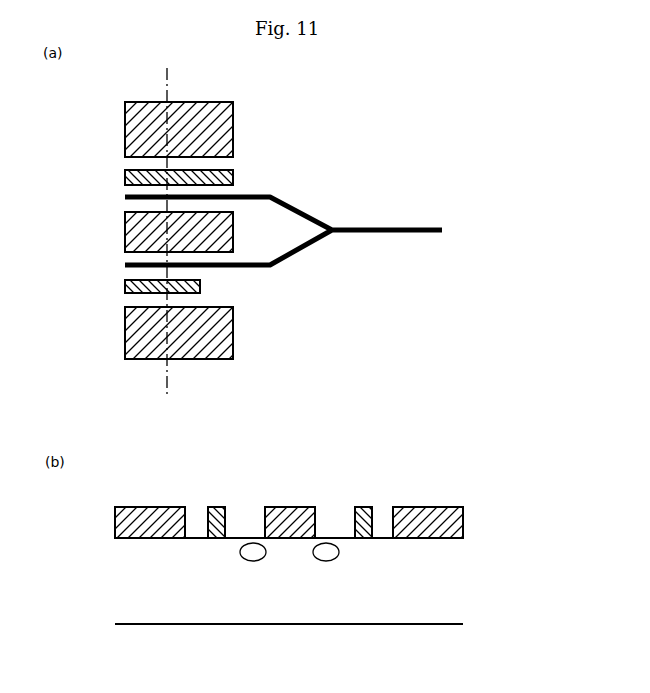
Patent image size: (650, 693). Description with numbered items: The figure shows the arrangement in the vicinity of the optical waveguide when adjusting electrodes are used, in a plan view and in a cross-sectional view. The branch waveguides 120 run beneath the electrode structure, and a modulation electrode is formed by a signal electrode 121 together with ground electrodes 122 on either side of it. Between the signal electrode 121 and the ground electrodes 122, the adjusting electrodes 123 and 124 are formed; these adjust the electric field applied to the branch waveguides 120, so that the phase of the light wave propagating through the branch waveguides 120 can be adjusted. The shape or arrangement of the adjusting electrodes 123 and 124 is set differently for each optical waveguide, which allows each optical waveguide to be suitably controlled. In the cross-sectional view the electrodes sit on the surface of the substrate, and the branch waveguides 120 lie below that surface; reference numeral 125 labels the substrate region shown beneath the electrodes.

The branch waveguides 120 is at (307, 210).
The signal electrode 121 is at (218, 237).
The ground electrodes 122 is at (218, 142).
The adjusting electrode 123 is at (125, 175).
The adjusting electrode 124 is at (125, 285).
The substrate 125 is at (412, 562).